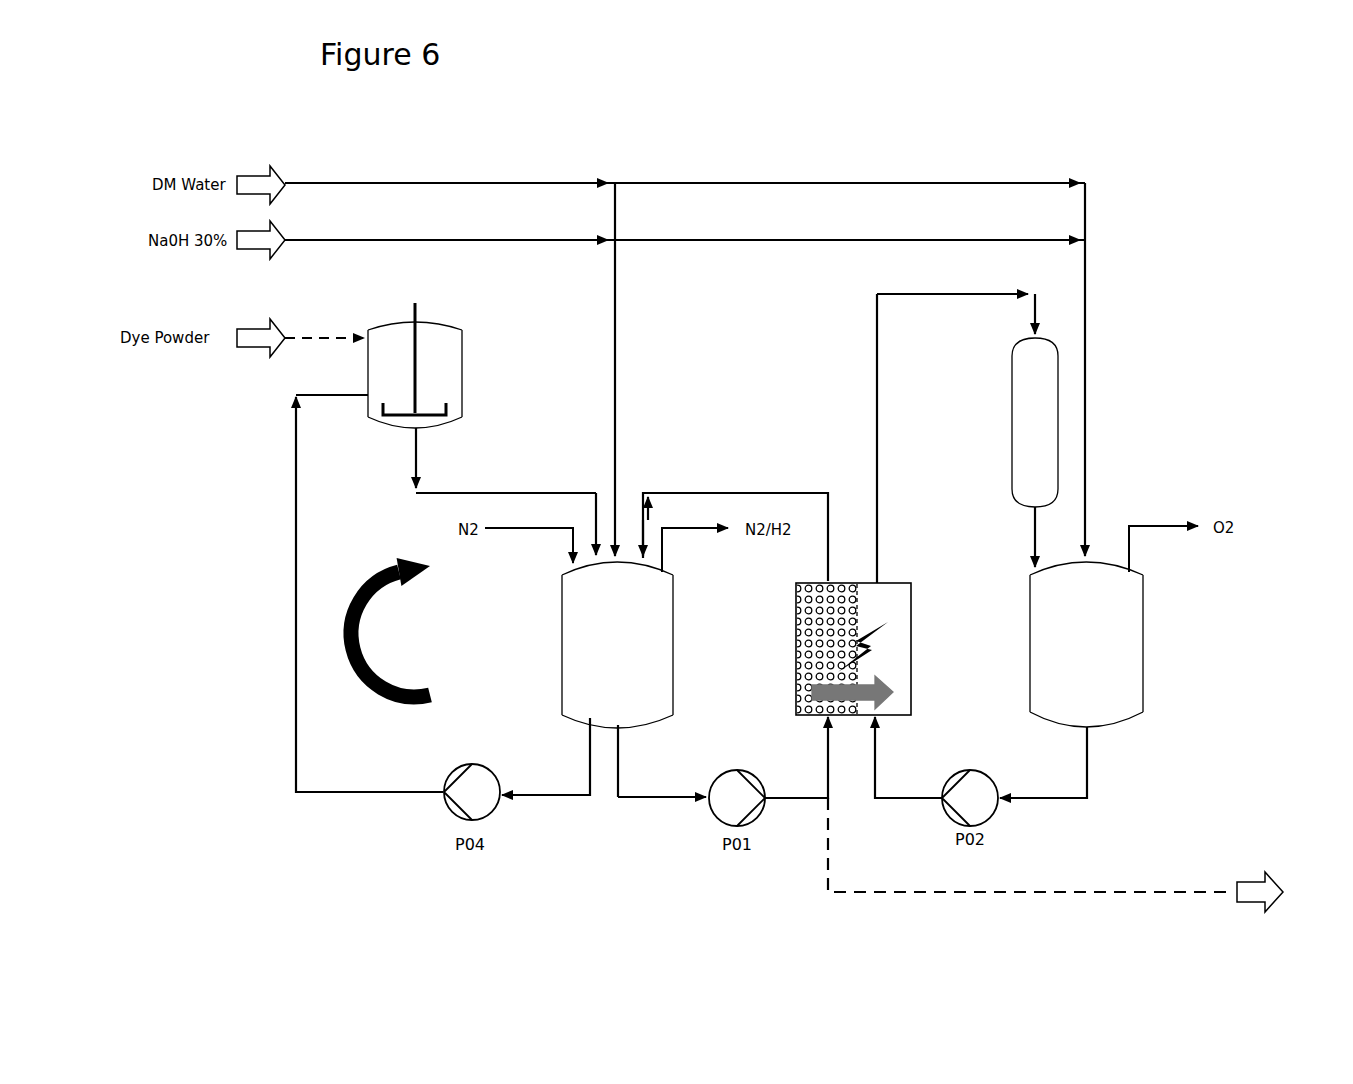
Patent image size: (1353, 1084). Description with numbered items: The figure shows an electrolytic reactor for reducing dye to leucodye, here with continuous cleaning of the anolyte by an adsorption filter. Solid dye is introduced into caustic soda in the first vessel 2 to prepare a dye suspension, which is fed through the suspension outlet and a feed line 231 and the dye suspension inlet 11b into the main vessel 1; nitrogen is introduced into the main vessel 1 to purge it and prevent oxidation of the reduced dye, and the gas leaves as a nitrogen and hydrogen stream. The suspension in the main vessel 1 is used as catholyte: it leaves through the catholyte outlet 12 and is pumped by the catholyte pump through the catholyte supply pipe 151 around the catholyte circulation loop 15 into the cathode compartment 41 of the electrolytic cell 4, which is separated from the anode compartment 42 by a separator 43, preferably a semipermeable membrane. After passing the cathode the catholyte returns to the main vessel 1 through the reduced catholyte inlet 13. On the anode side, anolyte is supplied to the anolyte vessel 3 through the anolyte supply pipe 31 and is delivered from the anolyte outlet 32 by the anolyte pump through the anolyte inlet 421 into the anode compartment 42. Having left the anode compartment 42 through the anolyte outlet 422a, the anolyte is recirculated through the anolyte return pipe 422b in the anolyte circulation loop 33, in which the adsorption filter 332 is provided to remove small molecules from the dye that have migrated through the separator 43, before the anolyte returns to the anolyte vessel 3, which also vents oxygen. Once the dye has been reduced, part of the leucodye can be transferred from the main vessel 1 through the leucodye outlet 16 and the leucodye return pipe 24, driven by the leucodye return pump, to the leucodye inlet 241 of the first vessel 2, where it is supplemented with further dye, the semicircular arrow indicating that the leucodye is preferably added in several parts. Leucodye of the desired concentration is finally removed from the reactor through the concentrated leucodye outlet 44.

The main vessel 1 is at (617, 645).
The first vessel 2 is at (415, 365).
The anolyte vessel 3 is at (1086, 644).
The electrolytic cell 4 is at (868, 607).
The dye suspension inlet 11b is at (593, 547).
The catholyte outlet 12 is at (620, 730).
The reduced catholyte inlet 13 is at (640, 556).
The catholyte circulation loop 15 is at (828, 735).
The leucodye outlet 16 is at (590, 720).
The leucodye return pipe 24 is at (296, 612).
The anolyte supply pipe 31 is at (1088, 353).
The anolyte outlet 32 is at (1088, 728).
The anolyte circulation loop 33 is at (925, 295).
The cathode compartment 41 is at (823, 633).
The anode compartment 42 is at (898, 667).
The separator 43 is at (858, 607).
The concentrated leucodye outlet 44 is at (973, 892).
The catholyte supply pipe 151 is at (640, 798).
The dye feed pipe 231 is at (523, 492).
The leucodye inlet 241 is at (368, 395).
The adsorption filter 332 is at (1060, 420).
The anolyte inlet 421 is at (877, 720).
The anolyte outlet 422a is at (877, 577).
The anolyte return pipe 422b is at (875, 375).